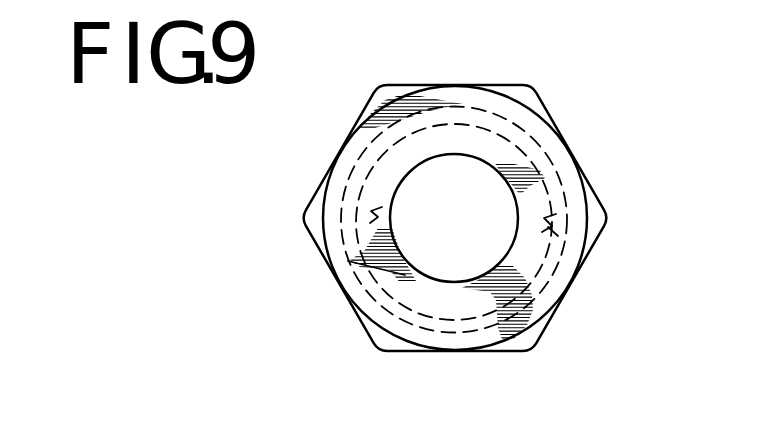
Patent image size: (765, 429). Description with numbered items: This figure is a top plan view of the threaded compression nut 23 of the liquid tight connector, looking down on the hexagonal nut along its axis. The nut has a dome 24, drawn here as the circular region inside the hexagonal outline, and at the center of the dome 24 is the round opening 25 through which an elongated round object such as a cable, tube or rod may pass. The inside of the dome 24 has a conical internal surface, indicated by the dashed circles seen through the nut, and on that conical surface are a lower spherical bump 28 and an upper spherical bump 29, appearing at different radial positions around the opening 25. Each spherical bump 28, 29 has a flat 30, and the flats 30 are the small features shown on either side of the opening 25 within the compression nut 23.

The threaded compression nut 23 is at (507, 110).
The dome 24 is at (541, 156).
The opening 25 is at (430, 233).
The lower spherical bump 28 is at (583, 262).
The upper spherical bump 29 is at (370, 207).
The flat 30 is at (573, 190).